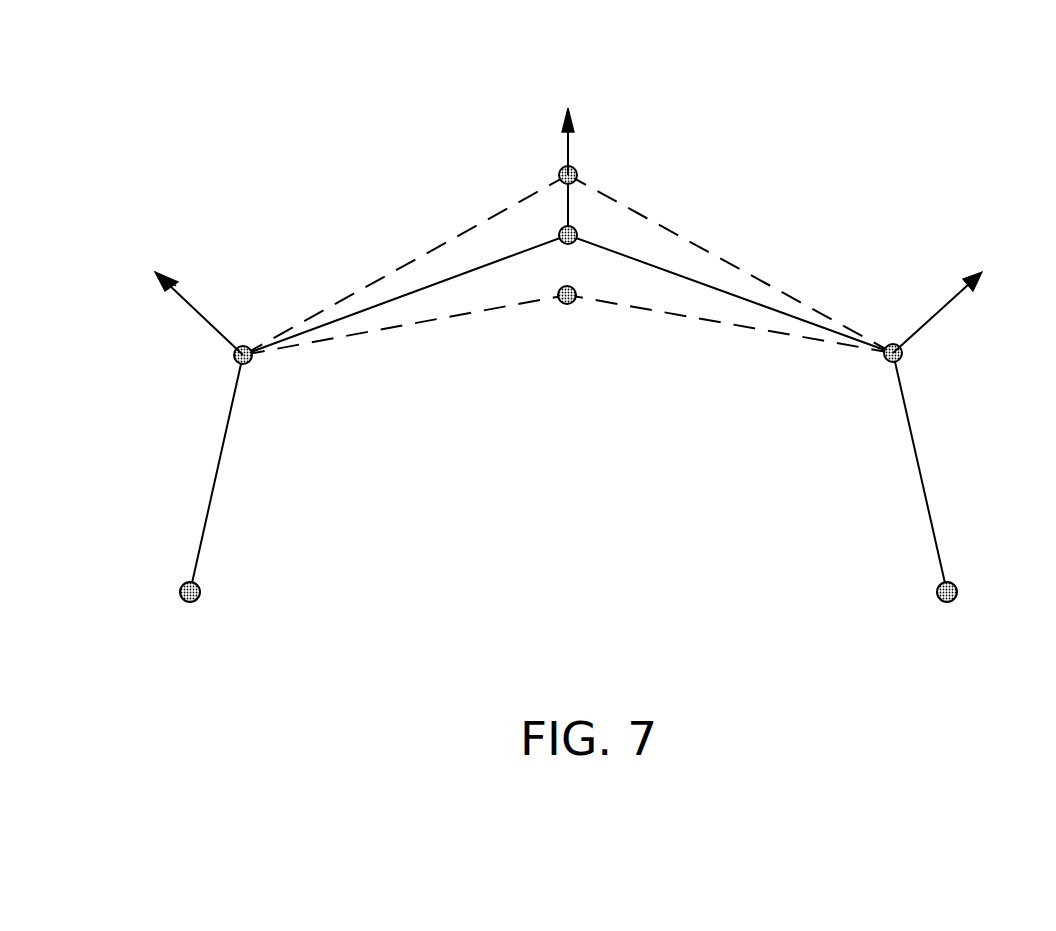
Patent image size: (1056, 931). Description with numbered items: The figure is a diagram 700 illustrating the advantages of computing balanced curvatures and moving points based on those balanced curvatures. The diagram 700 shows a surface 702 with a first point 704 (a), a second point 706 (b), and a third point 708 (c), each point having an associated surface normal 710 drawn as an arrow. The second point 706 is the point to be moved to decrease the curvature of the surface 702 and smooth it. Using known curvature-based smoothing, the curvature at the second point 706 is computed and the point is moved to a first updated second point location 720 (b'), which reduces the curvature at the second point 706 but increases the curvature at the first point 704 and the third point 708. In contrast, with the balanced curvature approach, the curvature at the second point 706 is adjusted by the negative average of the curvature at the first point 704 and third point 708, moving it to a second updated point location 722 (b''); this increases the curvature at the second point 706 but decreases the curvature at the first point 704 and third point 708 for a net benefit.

The diagram 700 is at (258, 157).
The surface 702 is at (440, 283).
The first point 704 is at (240, 347).
The second point 706 is at (560, 233).
The third point 708 is at (893, 347).
The surface normal 710 is at (565, 145).
The first updated second point location 720 is at (565, 305).
The second updated point location 722 is at (560, 170).